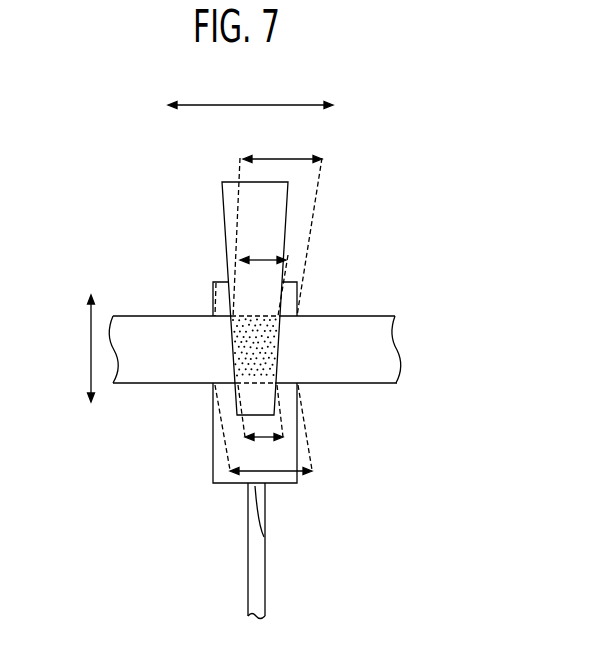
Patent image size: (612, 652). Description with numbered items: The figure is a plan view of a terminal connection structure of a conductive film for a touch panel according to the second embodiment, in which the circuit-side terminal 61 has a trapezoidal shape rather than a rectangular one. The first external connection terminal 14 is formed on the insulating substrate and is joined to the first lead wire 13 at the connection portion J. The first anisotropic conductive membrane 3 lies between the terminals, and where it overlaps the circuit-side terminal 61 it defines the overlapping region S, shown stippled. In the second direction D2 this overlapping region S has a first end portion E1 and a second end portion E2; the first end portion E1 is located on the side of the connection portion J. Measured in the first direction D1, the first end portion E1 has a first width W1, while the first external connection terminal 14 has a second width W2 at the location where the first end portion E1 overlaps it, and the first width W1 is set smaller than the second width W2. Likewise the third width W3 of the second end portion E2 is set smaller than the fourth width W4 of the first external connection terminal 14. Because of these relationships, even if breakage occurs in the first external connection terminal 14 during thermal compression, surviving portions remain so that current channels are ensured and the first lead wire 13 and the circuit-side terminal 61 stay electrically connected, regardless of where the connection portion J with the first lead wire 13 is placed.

The circuit-side terminal 61 is at (223, 202).
The first anisotropic conductive membrane 3 is at (363, 313).
The first external connection terminal 14 is at (213, 452).
The first lead wire 13 is at (247, 555).
The first end portion E1 is at (236, 364).
The second end portion E2 is at (233, 343).
The overlapping region S is at (263, 347).
The connection portion J is at (264, 537).
The first direction D1 is at (250, 86).
The second direction D2 is at (71, 348).
The first width W1 is at (264, 453).
The second width W2 is at (293, 471).
The third width W3 is at (263, 242).
The fourth width W4 is at (305, 160).